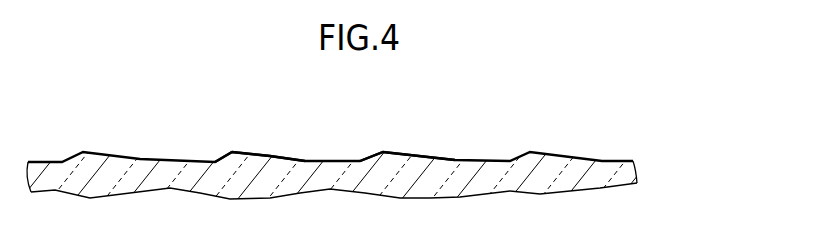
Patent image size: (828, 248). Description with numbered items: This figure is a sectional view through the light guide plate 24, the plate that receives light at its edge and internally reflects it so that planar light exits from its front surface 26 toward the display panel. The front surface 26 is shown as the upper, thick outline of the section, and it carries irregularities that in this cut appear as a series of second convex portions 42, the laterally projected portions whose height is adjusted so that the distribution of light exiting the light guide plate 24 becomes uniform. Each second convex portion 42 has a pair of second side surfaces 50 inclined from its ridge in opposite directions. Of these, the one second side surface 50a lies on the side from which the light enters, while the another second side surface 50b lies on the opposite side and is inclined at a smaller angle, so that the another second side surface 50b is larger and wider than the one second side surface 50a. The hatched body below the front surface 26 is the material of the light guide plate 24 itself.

The light guide plate 24 is at (641, 178).
The front surface 26 is at (605, 158).
The second convex portion 42 is at (375, 151).
The second side surfaces 50 is at (293, 93).
The one second side surface 50a is at (222, 151).
The another second side surface 50b is at (267, 151).